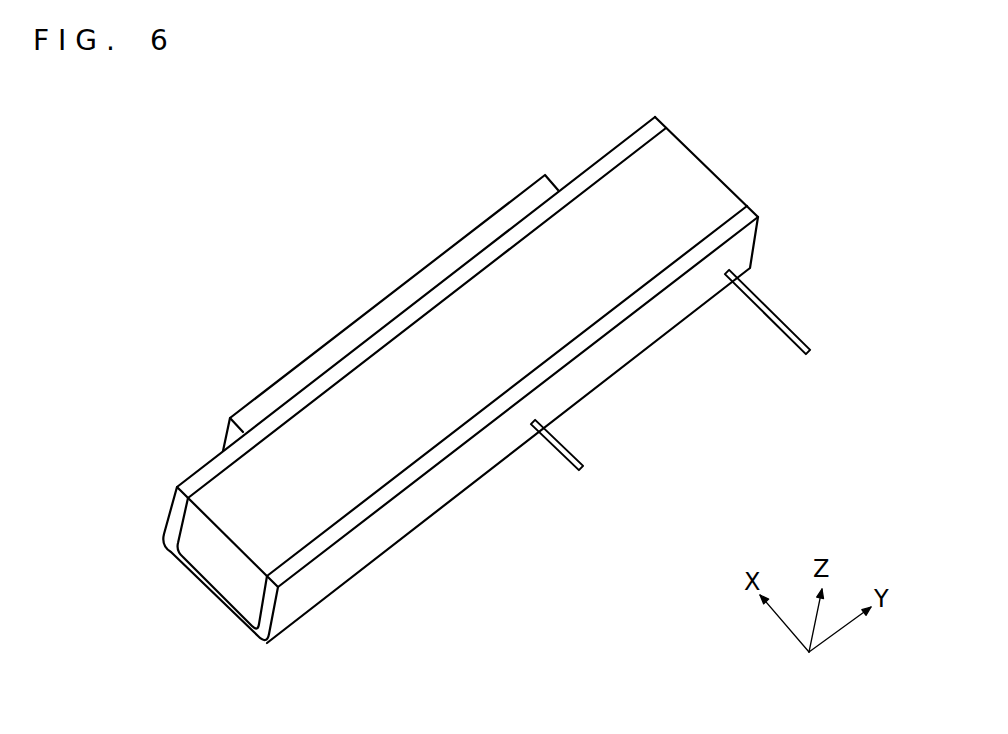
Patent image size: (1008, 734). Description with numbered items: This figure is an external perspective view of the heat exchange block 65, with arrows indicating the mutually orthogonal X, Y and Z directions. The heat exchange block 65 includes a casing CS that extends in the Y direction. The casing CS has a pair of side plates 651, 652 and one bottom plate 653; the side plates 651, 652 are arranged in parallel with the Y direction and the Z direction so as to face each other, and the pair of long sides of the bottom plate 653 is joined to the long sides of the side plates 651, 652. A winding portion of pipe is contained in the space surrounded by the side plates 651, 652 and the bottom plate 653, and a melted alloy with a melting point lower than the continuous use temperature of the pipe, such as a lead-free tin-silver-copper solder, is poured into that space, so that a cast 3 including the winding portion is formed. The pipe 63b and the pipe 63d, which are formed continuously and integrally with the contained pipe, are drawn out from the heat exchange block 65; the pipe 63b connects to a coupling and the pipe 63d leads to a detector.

The heat exchange block 65 is at (390, 305).
The side plate 651 is at (648, 122).
The side plate 652 is at (748, 206).
The bottom plate 653 is at (205, 592).
The cast 3 is at (683, 185).
The casing CS is at (481, 250).
The pipe 63b is at (563, 444).
The pipe 63d is at (768, 307).